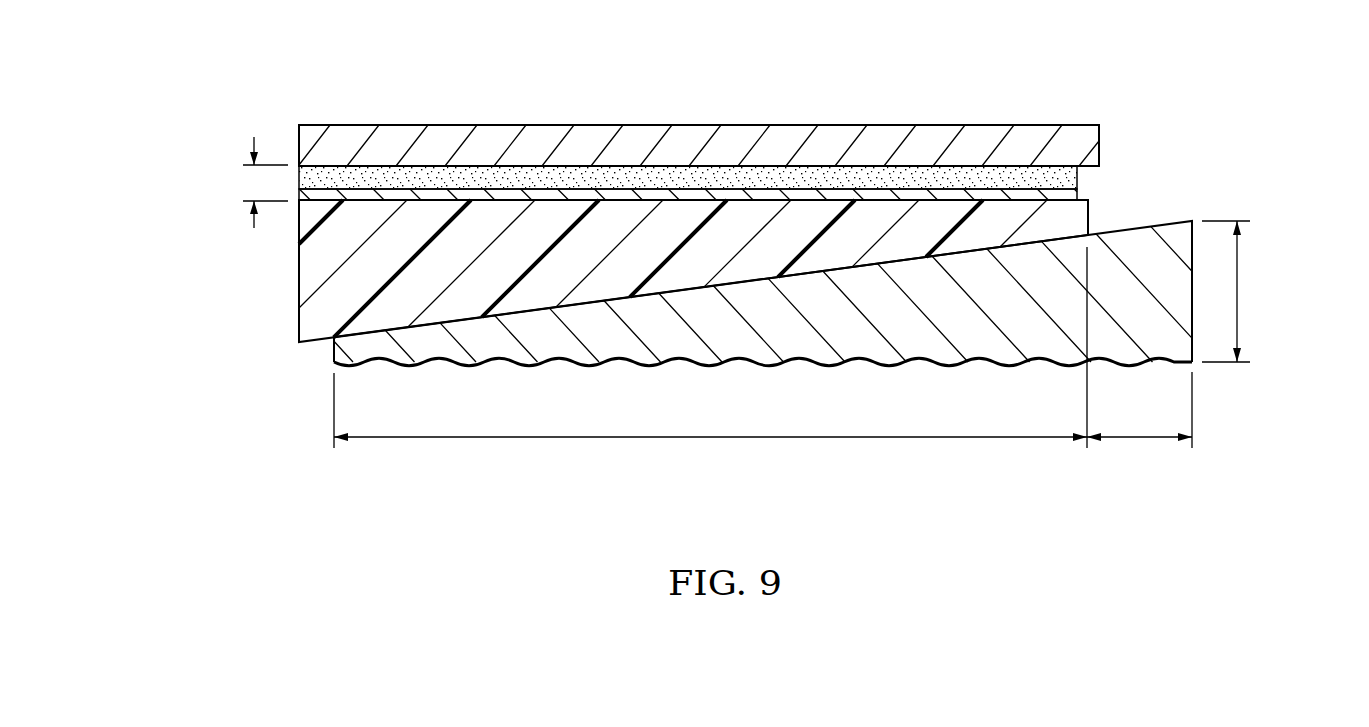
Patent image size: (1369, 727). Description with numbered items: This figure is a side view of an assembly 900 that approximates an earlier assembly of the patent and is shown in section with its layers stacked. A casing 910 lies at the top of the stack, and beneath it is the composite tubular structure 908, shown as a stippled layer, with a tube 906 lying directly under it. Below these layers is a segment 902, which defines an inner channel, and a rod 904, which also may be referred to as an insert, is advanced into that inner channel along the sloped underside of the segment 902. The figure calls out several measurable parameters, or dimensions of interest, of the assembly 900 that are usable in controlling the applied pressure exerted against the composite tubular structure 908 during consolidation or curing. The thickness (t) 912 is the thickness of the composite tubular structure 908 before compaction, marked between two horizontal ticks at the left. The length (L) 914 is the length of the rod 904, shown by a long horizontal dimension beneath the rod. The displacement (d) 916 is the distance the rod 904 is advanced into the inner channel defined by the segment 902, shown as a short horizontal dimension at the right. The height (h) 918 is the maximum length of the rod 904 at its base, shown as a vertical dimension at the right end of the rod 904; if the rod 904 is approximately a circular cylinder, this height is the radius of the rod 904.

The assembly 900 is at (1044, 79).
The segment 902 is at (300, 270).
The rod 904 is at (862, 367).
The tube 906 is at (468, 195).
The composite tubular structure 908 is at (667, 178).
The casing 910 is at (841, 135).
The thickness (t) 912 is at (252, 183).
The length (L) 914 is at (710, 438).
The displacement (d) 916 is at (1140, 438).
The height (h) 918 is at (1238, 290).